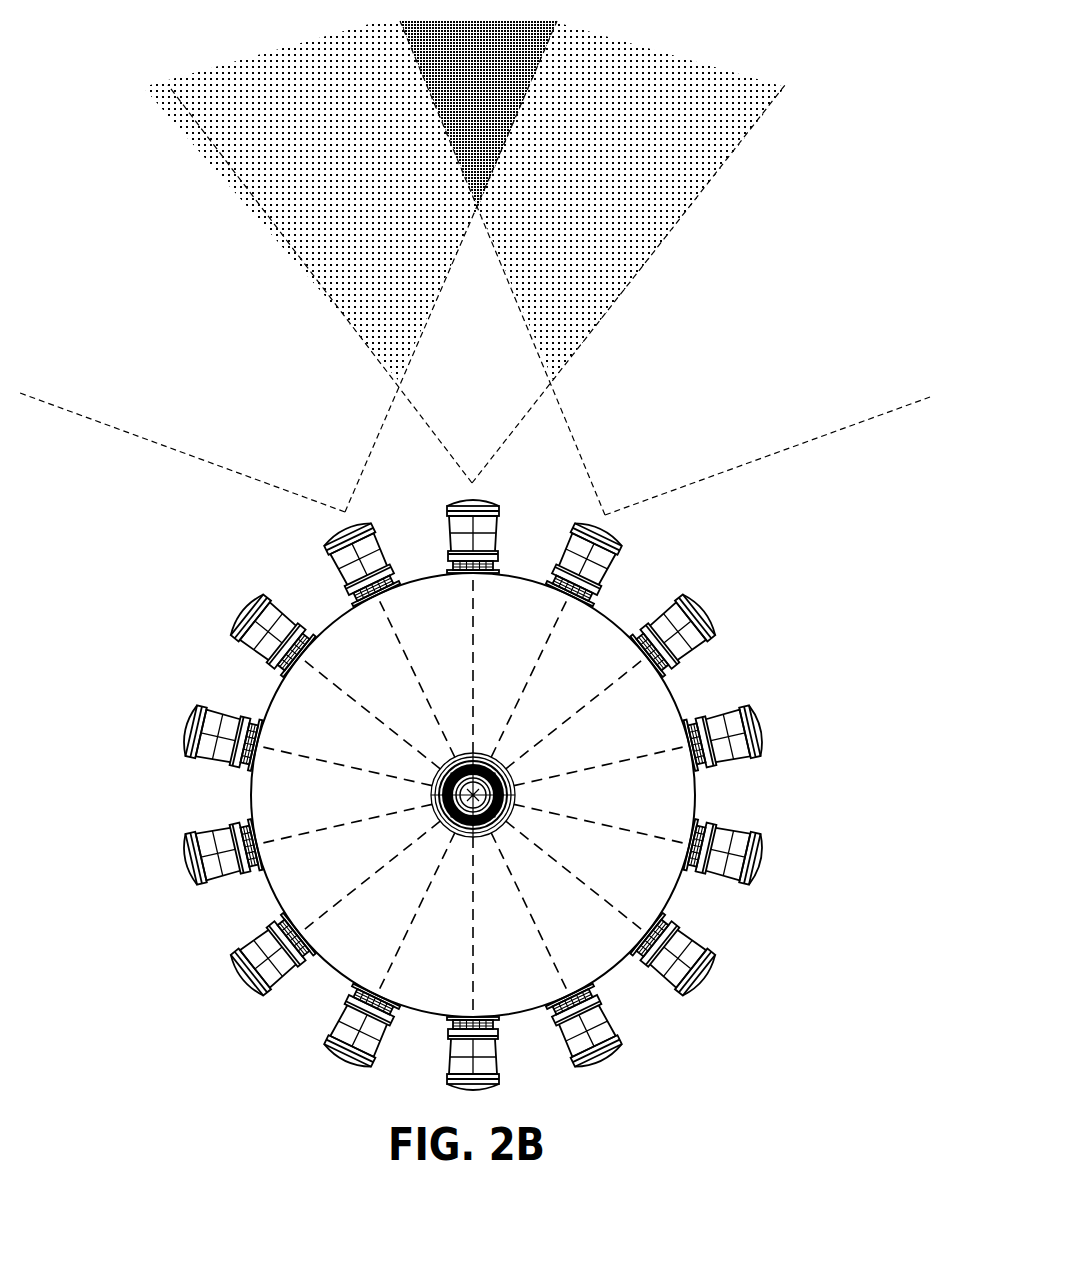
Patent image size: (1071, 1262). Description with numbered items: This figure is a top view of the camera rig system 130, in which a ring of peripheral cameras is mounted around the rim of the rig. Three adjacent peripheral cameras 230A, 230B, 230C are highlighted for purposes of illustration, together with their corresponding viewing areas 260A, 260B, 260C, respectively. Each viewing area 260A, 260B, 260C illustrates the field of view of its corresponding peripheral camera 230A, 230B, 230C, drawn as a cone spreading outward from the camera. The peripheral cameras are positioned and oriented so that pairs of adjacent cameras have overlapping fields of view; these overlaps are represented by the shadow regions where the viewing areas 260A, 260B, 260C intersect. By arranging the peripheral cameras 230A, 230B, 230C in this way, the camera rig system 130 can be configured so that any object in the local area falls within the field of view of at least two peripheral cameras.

The camera rig system 130 is at (80, 42).
The peripheral camera 230A is at (336, 562).
The peripheral camera 230B is at (493, 527).
The peripheral camera 230C is at (612, 567).
The viewing area 260A is at (200, 368).
The viewing area 260B is at (388, 238).
The viewing area 260C is at (767, 298).